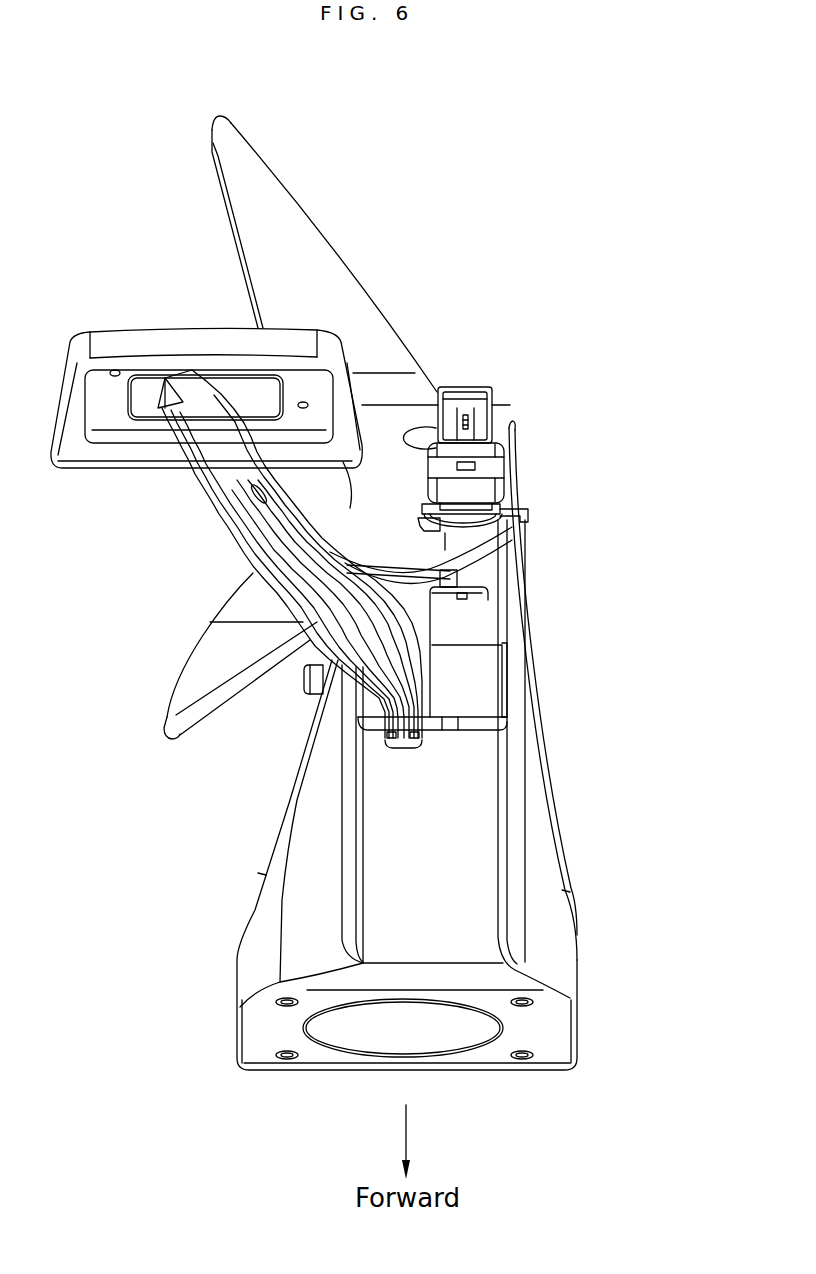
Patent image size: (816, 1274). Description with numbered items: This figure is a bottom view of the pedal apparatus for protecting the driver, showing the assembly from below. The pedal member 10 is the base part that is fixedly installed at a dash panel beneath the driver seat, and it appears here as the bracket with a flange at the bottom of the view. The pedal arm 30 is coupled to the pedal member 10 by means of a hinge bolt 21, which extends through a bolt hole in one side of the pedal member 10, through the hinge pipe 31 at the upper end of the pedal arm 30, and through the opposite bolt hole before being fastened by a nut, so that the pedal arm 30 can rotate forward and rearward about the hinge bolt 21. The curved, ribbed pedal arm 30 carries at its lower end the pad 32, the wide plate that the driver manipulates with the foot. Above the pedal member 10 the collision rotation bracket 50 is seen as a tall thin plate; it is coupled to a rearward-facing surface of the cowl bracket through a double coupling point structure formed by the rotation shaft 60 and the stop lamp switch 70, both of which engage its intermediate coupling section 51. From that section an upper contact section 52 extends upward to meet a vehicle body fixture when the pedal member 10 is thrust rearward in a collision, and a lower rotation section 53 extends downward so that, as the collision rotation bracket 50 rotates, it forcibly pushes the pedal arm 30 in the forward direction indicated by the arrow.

The pedal member 10 is at (555, 932).
The hinge bolt 21 is at (305, 677).
The pedal arm 30 is at (207, 508).
The hinge pipe 31 is at (485, 678).
The pad 32 is at (122, 347).
The collision rotation bracket 50 is at (290, 425).
The intermediate coupling section 51 is at (402, 482).
The upper contact section 52 is at (230, 150).
The lower rotation section 53 is at (185, 702).
The rotation shaft 60 is at (420, 432).
The stop lamp switch 70 is at (490, 460).